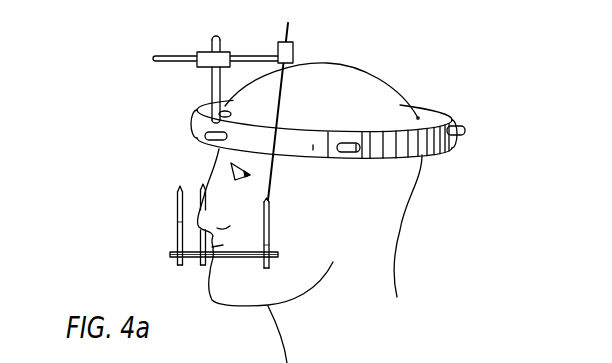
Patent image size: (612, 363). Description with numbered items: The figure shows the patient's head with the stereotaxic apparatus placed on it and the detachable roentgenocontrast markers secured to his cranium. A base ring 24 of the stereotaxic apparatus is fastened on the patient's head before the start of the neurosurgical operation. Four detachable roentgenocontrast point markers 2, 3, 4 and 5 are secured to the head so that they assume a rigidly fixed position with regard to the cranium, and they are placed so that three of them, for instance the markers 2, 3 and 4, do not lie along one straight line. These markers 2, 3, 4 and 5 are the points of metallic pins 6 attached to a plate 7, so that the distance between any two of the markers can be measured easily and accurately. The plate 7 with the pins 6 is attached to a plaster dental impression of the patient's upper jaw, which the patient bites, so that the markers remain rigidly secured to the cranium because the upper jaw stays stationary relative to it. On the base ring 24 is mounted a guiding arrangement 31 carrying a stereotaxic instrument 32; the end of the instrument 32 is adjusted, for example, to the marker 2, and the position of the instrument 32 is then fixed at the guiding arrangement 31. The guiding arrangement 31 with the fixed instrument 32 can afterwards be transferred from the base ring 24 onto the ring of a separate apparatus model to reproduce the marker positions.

The detachable roentgenocontrast point marker 2 is at (269, 203).
The detachable roentgenocontrast point marker 3 is at (202, 186).
The detachable roentgenocontrast point marker 4 is at (177, 192).
The detachable roentgenocontrast point marker 5 is at (177, 260).
The metallic pin 6 is at (205, 186).
The plate 7 is at (247, 258).
The base ring 24 is at (197, 127).
The guiding arrangement 31 is at (153, 59).
The stereotaxic instrument 32 is at (282, 101).